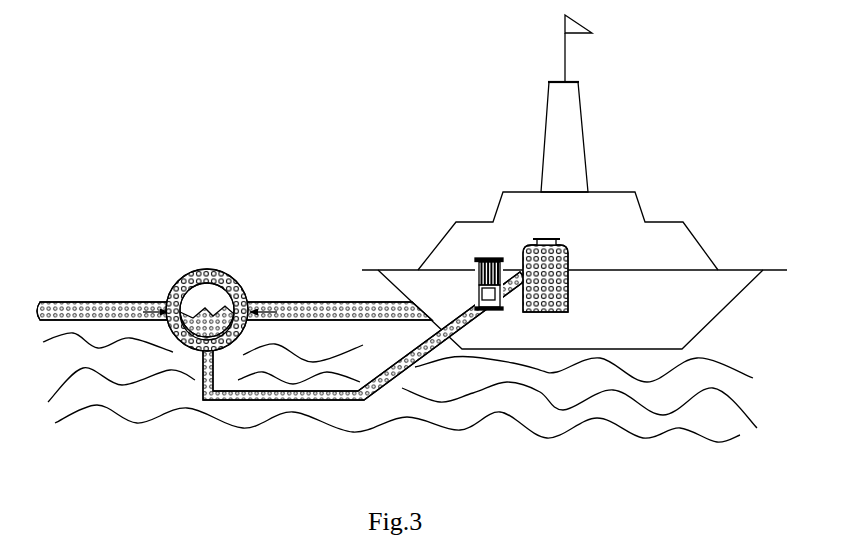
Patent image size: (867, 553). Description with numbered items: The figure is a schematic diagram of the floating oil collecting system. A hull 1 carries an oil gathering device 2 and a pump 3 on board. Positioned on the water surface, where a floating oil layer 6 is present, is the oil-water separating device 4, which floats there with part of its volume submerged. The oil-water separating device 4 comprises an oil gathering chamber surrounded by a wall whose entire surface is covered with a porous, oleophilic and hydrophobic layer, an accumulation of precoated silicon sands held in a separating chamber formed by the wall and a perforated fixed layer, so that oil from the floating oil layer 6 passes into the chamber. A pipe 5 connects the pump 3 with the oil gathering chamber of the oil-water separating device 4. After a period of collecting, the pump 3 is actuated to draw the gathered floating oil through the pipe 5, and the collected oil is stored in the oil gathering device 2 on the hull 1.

The hull 1 is at (670, 243).
The oil gathering device 2 is at (540, 238).
The pump 3 is at (474, 257).
The oil-water separating device 4 is at (235, 277).
The pipe 5 is at (269, 398).
The floating oil layer 6 is at (95, 302).